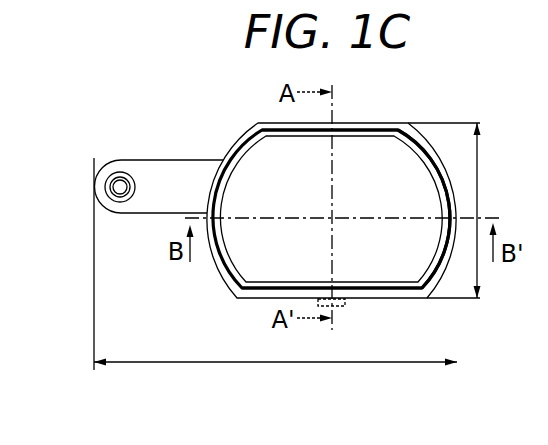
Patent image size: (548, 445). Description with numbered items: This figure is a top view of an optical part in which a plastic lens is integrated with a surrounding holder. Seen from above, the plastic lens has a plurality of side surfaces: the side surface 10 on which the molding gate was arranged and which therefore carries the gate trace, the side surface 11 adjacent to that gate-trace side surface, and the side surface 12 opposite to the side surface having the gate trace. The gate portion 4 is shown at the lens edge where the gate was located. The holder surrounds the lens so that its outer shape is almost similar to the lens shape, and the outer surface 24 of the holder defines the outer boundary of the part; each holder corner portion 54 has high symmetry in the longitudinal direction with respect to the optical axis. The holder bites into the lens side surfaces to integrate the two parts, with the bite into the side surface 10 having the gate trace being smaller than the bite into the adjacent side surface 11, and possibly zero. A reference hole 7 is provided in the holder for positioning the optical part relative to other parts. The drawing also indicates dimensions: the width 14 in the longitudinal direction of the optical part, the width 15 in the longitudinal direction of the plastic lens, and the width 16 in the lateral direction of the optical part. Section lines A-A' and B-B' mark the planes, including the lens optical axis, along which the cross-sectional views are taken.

The gate portion 4 is at (338, 308).
The reference hole 7 is at (117, 171).
The side surface having a gate trace 10 is at (402, 290).
The side surface adjacent to the side surface having a gate trace 11 is at (238, 155).
The side surface opposite to the side surface having a gate trace 12 is at (355, 135).
The width in a longitudinal direction of the optical part 14 is at (160, 362).
The width in a longitudinal direction of the plastic lens 15 is at (378, 335).
The width in a lateral direction of the optical part 16 is at (478, 204).
The outer surface of the holder 24 is at (542, 397).
The holder corner portion 54 is at (253, 125).